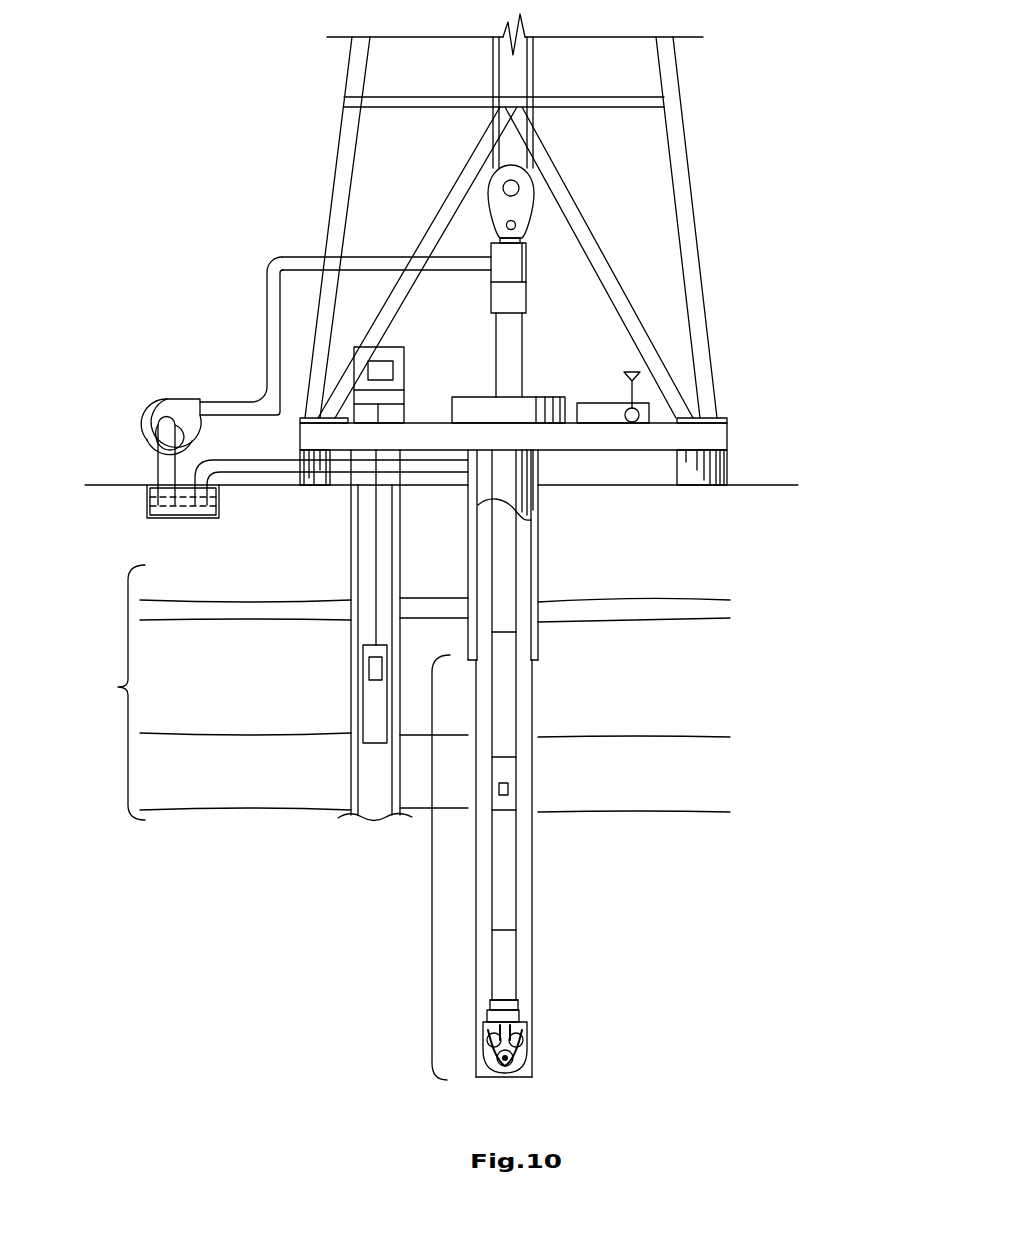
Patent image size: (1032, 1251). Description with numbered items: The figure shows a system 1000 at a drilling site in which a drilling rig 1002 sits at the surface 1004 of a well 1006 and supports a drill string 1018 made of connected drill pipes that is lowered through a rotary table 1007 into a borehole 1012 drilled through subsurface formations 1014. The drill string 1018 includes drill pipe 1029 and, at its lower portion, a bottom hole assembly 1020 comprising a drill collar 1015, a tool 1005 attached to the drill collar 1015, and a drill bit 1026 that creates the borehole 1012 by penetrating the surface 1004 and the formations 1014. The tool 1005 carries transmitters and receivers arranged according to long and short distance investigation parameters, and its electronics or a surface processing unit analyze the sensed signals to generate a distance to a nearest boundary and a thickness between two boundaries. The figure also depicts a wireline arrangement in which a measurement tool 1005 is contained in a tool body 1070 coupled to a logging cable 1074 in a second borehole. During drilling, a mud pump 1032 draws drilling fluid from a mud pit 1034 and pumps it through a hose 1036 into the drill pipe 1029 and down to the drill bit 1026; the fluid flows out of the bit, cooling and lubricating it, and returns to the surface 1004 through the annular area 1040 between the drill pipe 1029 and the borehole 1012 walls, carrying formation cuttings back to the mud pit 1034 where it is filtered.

The system 1000 is at (278, 103).
The drilling rig 1002 is at (697, 192).
The surface 1004 is at (745, 484).
The tool 1005 is at (508, 787).
The well 1006 is at (548, 480).
The rotary table 1007 is at (472, 397).
The borehole 1012 is at (530, 600).
The subsurface formations 1014 is at (392, 692).
The drill collar 1015 is at (507, 767).
The drill string 1018 is at (516, 675).
The bottom hole assembly 1020 is at (432, 880).
The drill bit 1026 is at (527, 1038).
The drill pipe 1029 is at (525, 543).
The mud pump 1032 is at (175, 400).
The mud pit 1034 is at (150, 484).
The hose 1036 is at (265, 345).
The annular area 1040 is at (525, 715).
The tool body 1070 is at (363, 702).
The logging cable 1074 is at (376, 548).